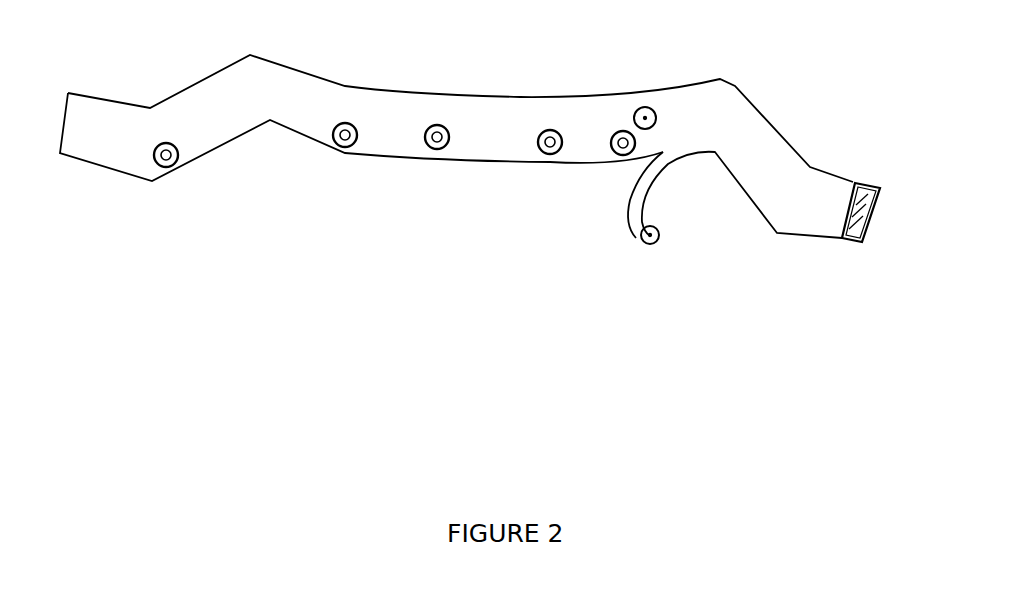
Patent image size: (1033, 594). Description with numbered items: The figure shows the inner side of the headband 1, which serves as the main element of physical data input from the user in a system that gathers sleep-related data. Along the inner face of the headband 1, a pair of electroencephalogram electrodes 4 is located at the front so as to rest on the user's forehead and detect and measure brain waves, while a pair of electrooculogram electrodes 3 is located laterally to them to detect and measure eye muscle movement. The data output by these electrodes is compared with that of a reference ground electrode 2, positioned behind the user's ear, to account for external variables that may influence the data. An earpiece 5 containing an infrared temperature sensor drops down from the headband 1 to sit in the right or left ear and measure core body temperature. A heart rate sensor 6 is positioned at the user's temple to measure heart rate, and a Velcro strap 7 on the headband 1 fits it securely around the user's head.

The headband 1 is at (492, 115).
The reference ground electrode 2 is at (160, 166).
The electrooculogram (EOG) electrodes 3 is at (612, 149).
The electroencephalogram (EEG) electrodes 4 is at (441, 149).
The earpiece 5 is at (654, 240).
The heart rate sensor 6 is at (657, 118).
The Velcro strap 7 is at (865, 243).